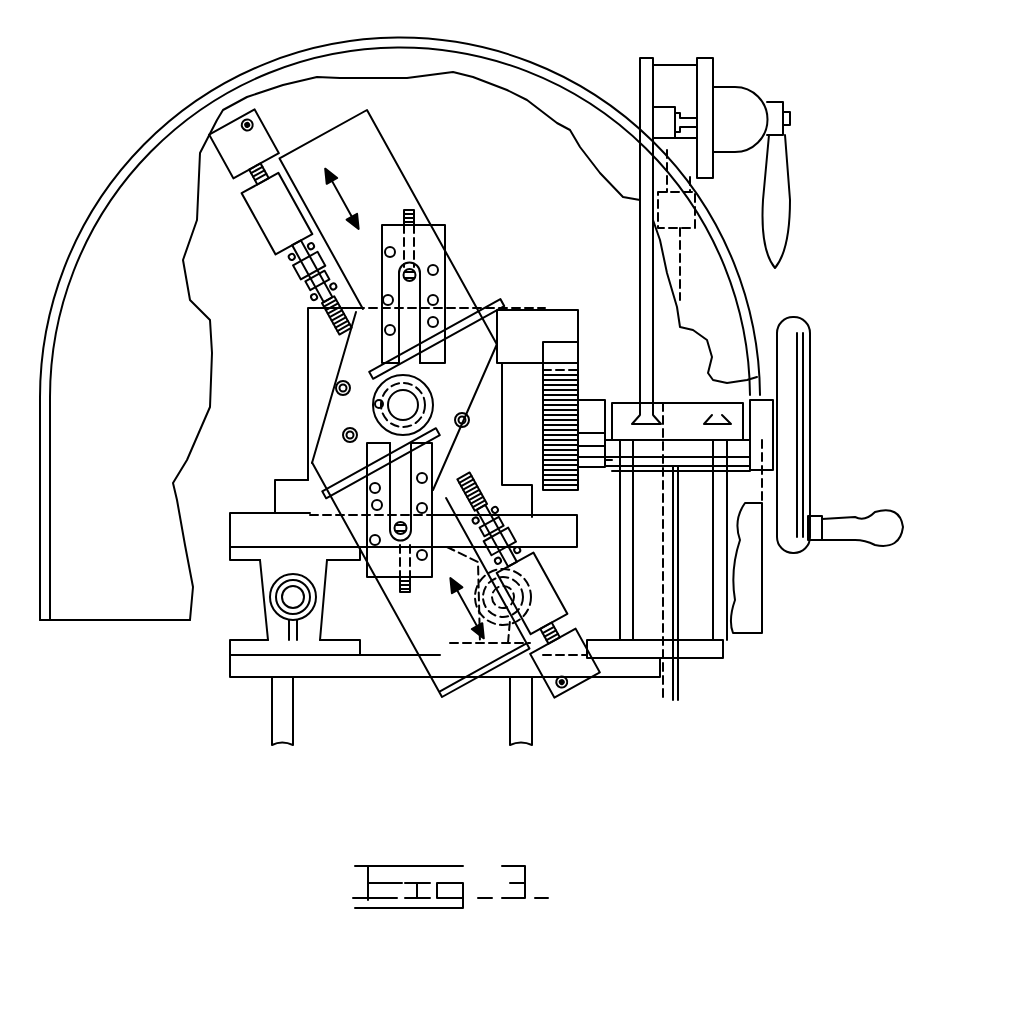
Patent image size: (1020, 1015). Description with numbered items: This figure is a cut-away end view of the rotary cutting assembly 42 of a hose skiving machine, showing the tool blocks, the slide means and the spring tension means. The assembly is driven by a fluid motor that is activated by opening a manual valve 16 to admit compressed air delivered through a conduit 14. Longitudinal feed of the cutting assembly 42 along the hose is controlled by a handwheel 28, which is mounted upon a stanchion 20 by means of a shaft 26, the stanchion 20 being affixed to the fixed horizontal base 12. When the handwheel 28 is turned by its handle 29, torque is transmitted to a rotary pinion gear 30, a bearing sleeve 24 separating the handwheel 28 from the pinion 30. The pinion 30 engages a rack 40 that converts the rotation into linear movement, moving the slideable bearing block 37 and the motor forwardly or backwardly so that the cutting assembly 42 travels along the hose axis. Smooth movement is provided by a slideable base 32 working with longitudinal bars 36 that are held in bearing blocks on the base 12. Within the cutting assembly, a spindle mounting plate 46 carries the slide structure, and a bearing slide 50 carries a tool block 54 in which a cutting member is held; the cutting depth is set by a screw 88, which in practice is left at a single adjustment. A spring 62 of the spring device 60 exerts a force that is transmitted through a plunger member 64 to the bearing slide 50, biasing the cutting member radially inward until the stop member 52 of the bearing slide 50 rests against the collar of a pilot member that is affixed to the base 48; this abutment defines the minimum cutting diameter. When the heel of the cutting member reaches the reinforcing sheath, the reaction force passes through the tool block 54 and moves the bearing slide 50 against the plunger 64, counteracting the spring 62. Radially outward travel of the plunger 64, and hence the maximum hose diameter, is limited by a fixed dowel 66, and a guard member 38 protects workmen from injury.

The fixed horizontal base 12 is at (240, 664).
The conduit 14 is at (670, 686).
The manual valve 16 is at (750, 133).
The stanchion 20 is at (640, 240).
The bearing sleeve 24 is at (735, 433).
The shaft 26 is at (620, 378).
The handwheel 28 is at (810, 342).
The handle 29 is at (868, 516).
The rotary pinion gear 30 is at (548, 418).
The slideable base 32 is at (312, 545).
The longitudinal bars 36 is at (272, 597).
The slideable bearing block 37 is at (338, 355).
The guard member 38 is at (132, 379).
The rack 40 is at (575, 358).
The rotary cutting assembly 42 is at (520, 52).
The spindle mounting plate 46 is at (492, 373).
The base 48 is at (378, 405).
The bearing slide 50 is at (383, 181).
The stop member 52 is at (470, 318).
The tool block 54 is at (445, 238).
The spring device 60 is at (264, 226).
The spring 62 is at (298, 260).
The plunger member 64 is at (268, 150).
The fixed dowel 66 is at (253, 128).
The screw 88 is at (420, 198).